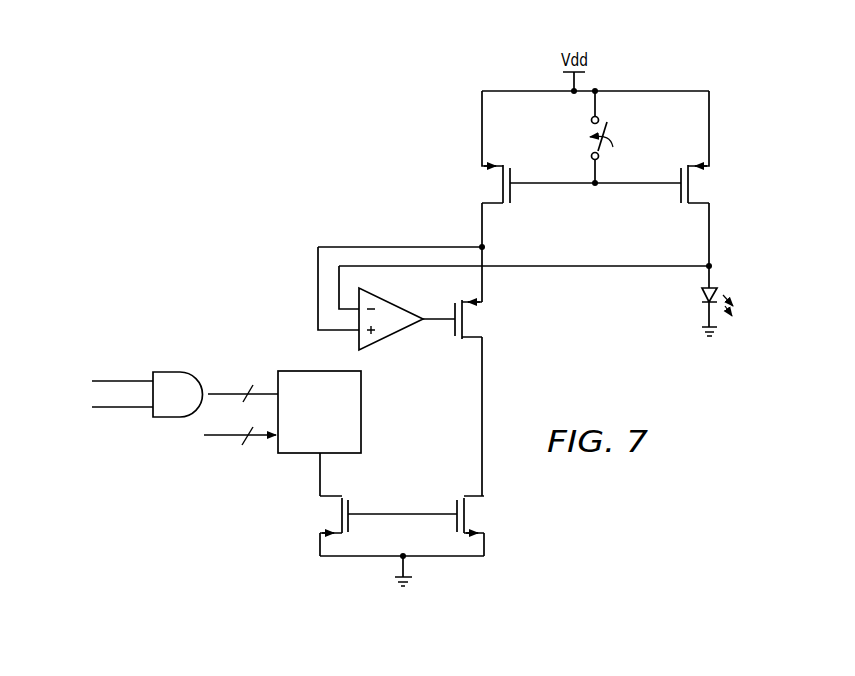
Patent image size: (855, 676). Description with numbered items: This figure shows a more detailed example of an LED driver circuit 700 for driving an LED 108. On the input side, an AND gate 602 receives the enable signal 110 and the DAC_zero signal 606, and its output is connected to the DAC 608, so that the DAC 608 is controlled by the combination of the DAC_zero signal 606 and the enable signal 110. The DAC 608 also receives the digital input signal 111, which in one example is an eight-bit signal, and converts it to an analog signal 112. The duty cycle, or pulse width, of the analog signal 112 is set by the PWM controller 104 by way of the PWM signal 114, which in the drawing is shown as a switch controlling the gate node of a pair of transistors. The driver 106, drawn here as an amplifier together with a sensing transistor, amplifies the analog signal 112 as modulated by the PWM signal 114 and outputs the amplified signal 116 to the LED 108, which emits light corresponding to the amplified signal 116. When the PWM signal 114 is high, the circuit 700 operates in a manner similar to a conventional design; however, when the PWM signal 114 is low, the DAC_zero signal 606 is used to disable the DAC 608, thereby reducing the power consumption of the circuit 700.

The LED driver circuit 700 is at (198, 169).
The PWM controller 104 is at (607, 131).
The driver 106 is at (387, 222).
The LED 108 is at (703, 297).
The enable signal 110 is at (123, 380).
The digital input signal 111 is at (227, 437).
The analog signal 112 is at (320, 475).
The PWM signal 114 is at (588, 191).
The amplified signal 116 is at (705, 260).
The AND gate 602 is at (180, 372).
The DAC_zero signal 606 is at (123, 408).
The DAC 608 is at (362, 413).